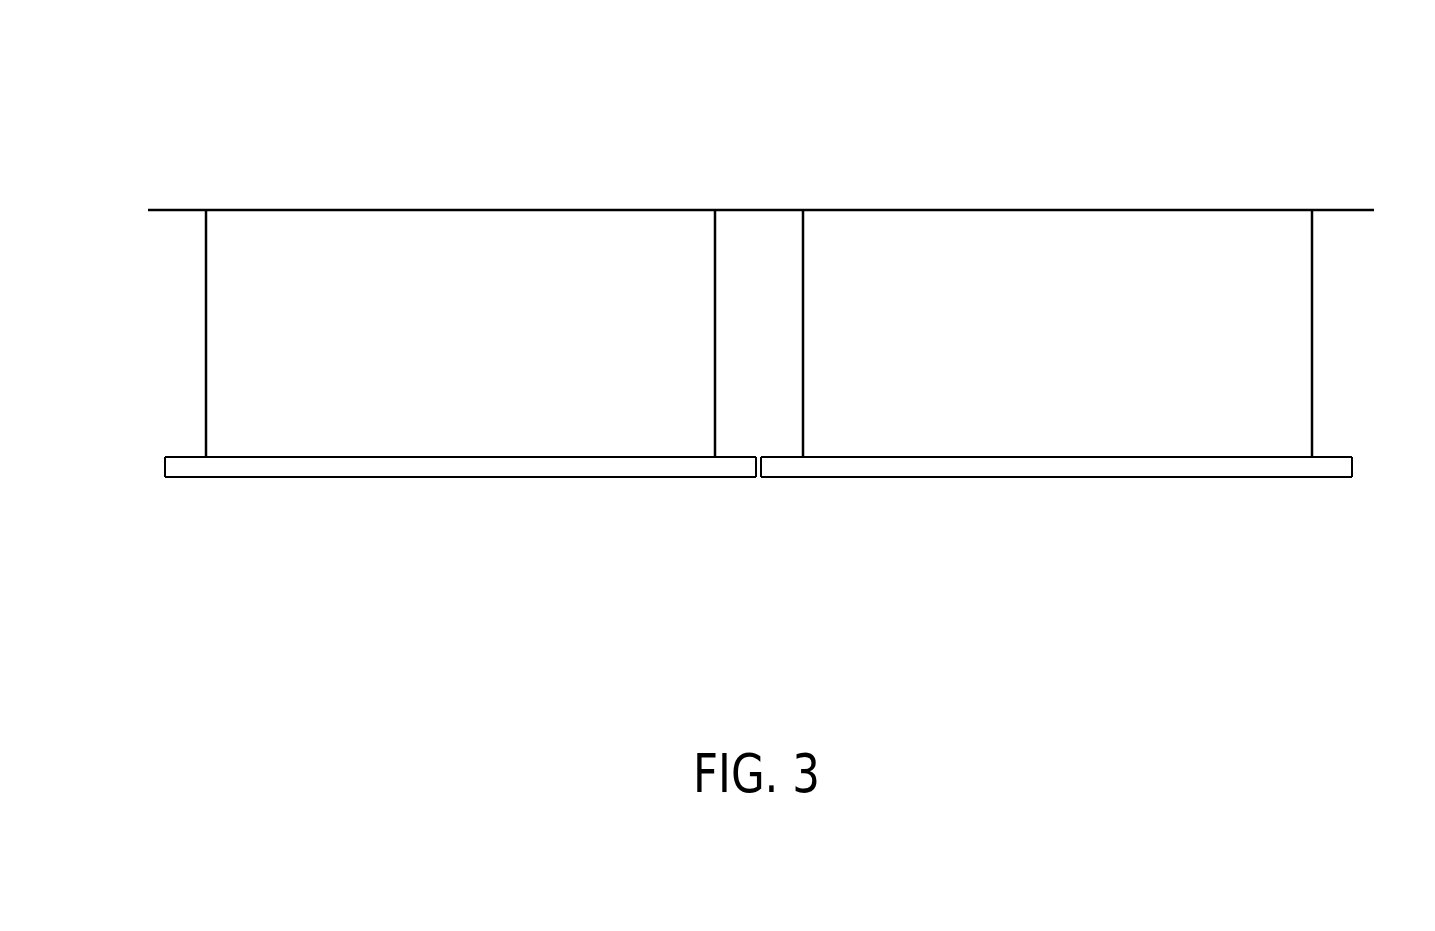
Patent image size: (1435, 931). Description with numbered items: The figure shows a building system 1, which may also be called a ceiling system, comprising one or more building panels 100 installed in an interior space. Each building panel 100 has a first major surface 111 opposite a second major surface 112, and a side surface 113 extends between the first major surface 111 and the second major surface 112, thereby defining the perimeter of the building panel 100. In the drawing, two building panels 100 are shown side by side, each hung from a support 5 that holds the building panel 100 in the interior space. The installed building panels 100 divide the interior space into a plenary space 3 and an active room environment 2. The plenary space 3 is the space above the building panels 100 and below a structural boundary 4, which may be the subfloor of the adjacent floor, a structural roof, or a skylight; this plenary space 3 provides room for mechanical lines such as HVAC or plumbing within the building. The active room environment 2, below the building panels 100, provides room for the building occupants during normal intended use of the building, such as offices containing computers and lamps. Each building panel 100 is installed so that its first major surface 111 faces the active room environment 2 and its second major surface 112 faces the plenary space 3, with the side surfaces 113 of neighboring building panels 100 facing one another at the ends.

The building system 1 is at (1213, 98).
The active room environment 2 is at (1193, 645).
The plenary space 3 is at (1345, 326).
The structural boundary 4 is at (185, 212).
The support 5 is at (206, 345).
The building panel 100 is at (158, 482).
The first major surface 111 is at (483, 478).
The second major surface 112 is at (422, 457).
The side surface 113 is at (165, 467).